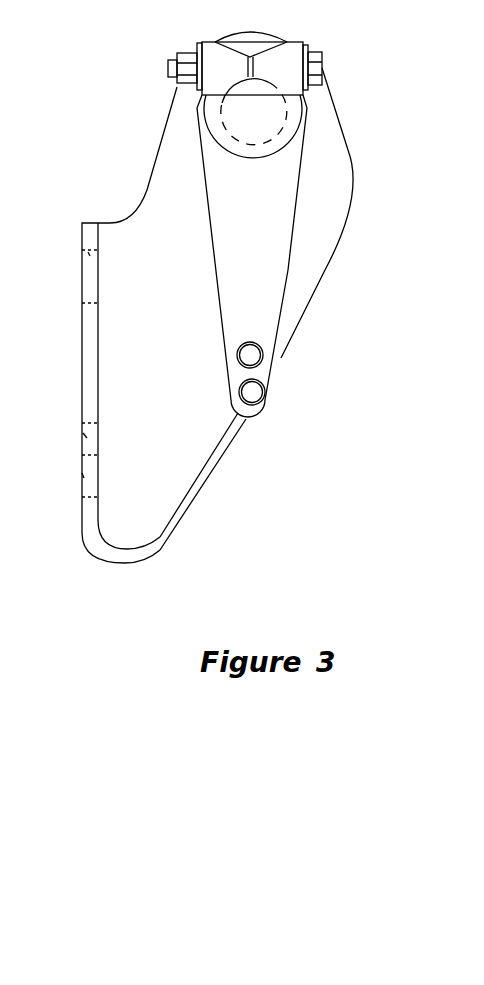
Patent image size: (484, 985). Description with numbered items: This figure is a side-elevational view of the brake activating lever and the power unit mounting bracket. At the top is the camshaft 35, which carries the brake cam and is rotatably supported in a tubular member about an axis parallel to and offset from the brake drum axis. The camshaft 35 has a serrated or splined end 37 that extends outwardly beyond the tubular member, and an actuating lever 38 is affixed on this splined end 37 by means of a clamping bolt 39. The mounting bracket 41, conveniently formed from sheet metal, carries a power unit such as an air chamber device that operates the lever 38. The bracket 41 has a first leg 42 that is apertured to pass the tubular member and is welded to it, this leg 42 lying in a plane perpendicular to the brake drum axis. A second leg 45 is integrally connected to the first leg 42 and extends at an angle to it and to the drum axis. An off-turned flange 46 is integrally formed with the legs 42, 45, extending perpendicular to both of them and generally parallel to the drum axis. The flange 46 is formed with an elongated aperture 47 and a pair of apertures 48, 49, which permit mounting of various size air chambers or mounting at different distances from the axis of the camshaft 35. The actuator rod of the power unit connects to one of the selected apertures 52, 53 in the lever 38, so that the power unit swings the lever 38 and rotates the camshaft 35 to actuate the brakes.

The camshaft 35 is at (242, 117).
The serrated or splined end 37 is at (283, 118).
The actuating lever 38 is at (283, 252).
The clamping bolt 39 is at (313, 52).
The mounting bracket 41 is at (322, 289).
The first leg 42 is at (355, 167).
The second leg 45 is at (208, 460).
The off-turned flange 46 is at (82, 368).
The elongated aperture 47 is at (80, 262).
The aperture 48 is at (80, 443).
The aperture 49 is at (80, 482).
The aperture 52 is at (263, 356).
The aperture 53 is at (259, 403).